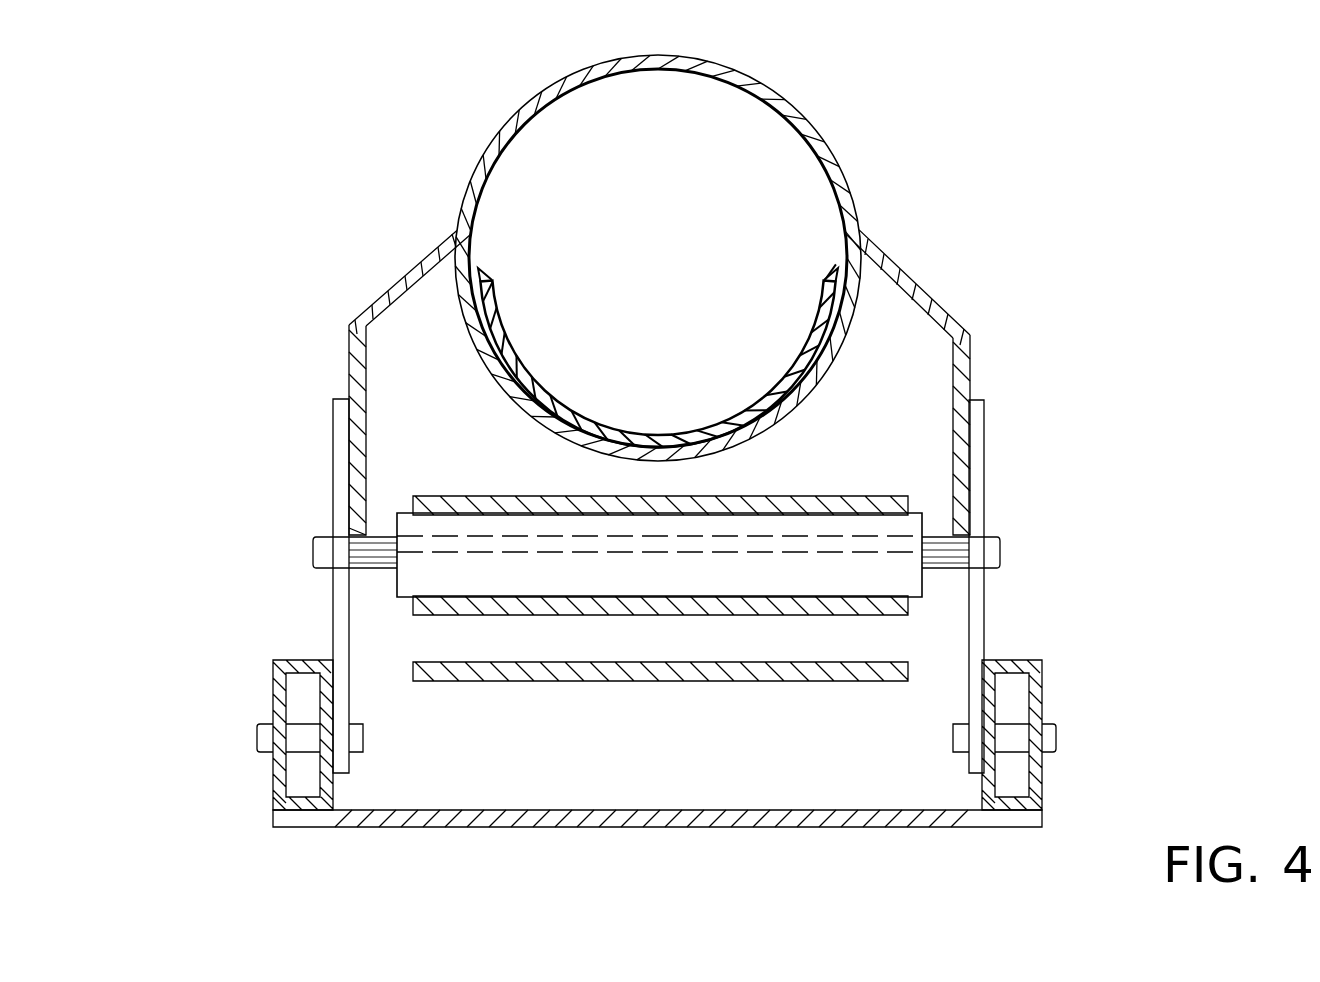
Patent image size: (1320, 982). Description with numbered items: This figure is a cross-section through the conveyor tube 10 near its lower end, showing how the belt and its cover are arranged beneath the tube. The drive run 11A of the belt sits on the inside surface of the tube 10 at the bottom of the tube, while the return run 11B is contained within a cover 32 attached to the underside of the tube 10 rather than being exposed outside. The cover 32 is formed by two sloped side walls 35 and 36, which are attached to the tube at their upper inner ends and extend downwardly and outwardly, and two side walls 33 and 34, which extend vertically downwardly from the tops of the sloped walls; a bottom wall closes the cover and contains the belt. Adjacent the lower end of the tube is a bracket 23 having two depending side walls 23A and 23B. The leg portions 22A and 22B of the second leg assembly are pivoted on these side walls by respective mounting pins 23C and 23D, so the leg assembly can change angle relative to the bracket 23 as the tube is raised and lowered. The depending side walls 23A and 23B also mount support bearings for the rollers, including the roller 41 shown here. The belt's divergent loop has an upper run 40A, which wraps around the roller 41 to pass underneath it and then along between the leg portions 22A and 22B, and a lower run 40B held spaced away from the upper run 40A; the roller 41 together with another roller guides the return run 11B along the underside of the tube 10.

The tube 10 is at (493, 127).
The drive run 11A is at (630, 426).
The return run 11B is at (766, 498).
The leg portion 22A is at (272, 795).
The leg portion 22B is at (1043, 788).
The bracket 23 is at (662, 586).
The depending side wall 23A is at (331, 470).
The depending side wall 23B is at (986, 500).
The mounting pin 23C is at (256, 738).
The mounting pin 23D is at (1058, 722).
The cover 32 is at (671, 376).
The side wall 33 is at (347, 368).
The side wall 34 is at (984, 376).
The sloped side wall 35 is at (393, 272).
The sloped side wall 36 is at (918, 272).
The upper run 40A is at (620, 617).
The lower run 40B is at (705, 684).
The roller 41 is at (516, 526).